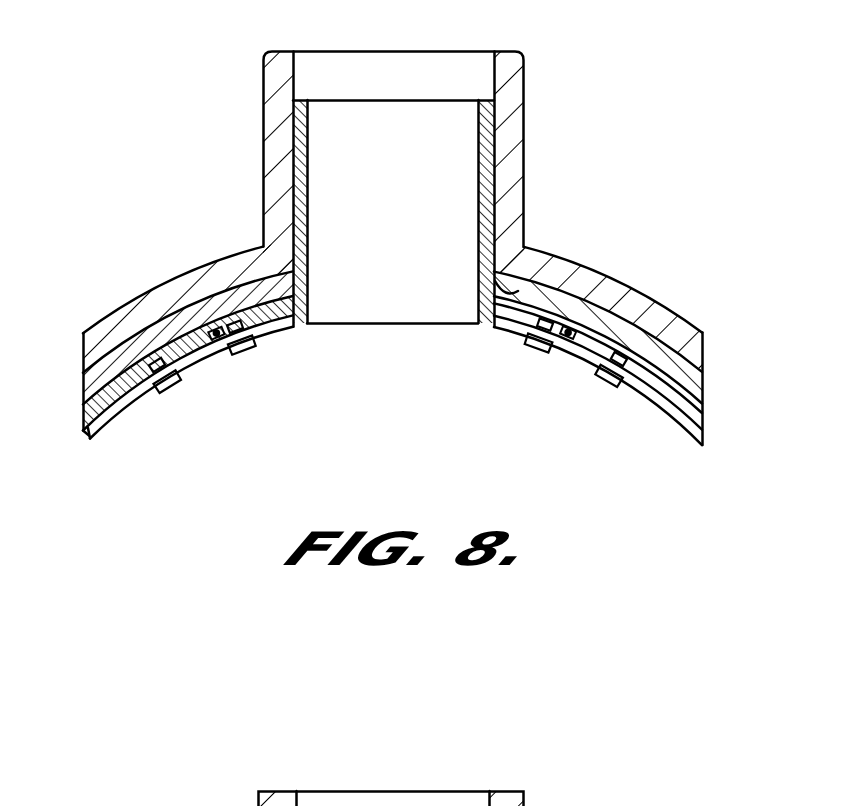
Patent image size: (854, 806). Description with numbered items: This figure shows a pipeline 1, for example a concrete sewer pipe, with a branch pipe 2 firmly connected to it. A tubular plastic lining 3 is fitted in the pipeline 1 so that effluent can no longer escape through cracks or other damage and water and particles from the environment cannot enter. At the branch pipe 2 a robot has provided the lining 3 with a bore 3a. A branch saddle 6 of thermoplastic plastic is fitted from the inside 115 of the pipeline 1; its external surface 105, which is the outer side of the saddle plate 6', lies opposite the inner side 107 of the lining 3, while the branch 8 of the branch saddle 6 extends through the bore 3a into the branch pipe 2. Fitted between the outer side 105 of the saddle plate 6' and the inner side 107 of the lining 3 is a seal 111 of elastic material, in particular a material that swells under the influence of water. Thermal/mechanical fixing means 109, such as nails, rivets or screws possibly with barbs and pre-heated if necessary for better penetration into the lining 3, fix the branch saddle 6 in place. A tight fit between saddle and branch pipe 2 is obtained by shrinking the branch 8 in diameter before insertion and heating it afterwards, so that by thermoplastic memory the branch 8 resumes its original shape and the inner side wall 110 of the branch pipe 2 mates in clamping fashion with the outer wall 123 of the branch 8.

The pipeline 1 is at (677, 327).
The branch pipe 2 is at (515, 133).
The lining 3 is at (623, 333).
The bore 3a is at (399, 293).
The branch saddle 6 is at (395, 374).
The saddle plate 6' is at (57, 454).
The branch 8 is at (304, 181).
The external surface 105 is at (105, 425).
The inner side 107 is at (178, 327).
The thermal/mechanical fixing means 109 is at (170, 390).
The inner side wall 110 is at (492, 72).
The seal 111 is at (216, 335).
The inside of the pipeline 115 is at (512, 268).
The outer wall 123 is at (493, 192).